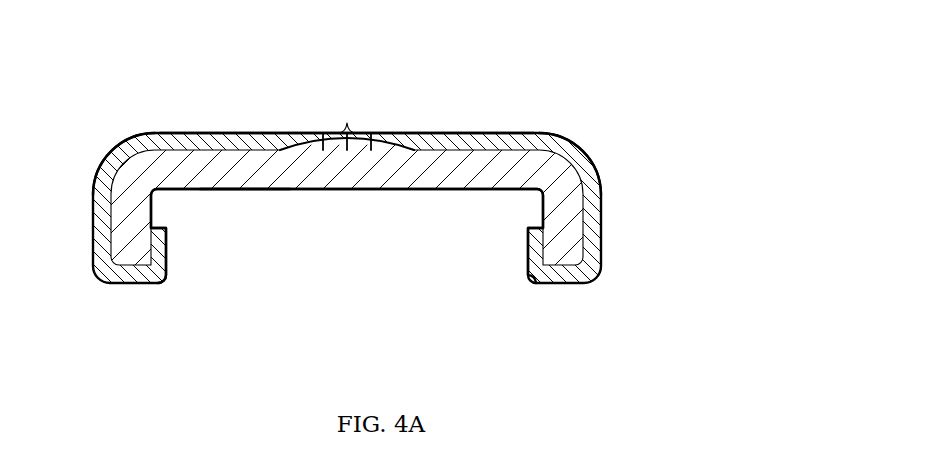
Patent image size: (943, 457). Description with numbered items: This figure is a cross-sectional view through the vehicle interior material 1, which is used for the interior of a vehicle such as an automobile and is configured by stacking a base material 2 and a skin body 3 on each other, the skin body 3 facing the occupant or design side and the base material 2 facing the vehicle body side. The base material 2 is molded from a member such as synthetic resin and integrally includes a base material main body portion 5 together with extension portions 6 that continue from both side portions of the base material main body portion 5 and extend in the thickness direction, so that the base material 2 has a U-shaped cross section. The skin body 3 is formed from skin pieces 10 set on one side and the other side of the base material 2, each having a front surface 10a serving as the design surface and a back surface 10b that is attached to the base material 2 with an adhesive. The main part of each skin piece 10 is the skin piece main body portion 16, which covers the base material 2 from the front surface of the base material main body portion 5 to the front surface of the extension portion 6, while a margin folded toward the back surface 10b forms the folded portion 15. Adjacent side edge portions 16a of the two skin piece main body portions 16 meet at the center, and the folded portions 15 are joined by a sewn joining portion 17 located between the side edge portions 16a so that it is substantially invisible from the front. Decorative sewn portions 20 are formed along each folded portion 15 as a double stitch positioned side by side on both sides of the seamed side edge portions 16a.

The vehicle interior material 1 is at (447, 55).
The base material 2 is at (243, 191).
The skin body 3 is at (147, 122).
The base material main body portion 5 is at (450, 175).
The extension portion 6 is at (132, 225).
The skin piece 10 is at (193, 135).
The front surface 10a is at (240, 137).
The back surface 10b is at (188, 150).
The folded portion 15 is at (310, 150).
The skin piece main body portion 16 is at (127, 148).
The side edge portion 16a is at (347, 133).
The joining portion 17 is at (347, 150).
The sewn portion 20 is at (323, 132).